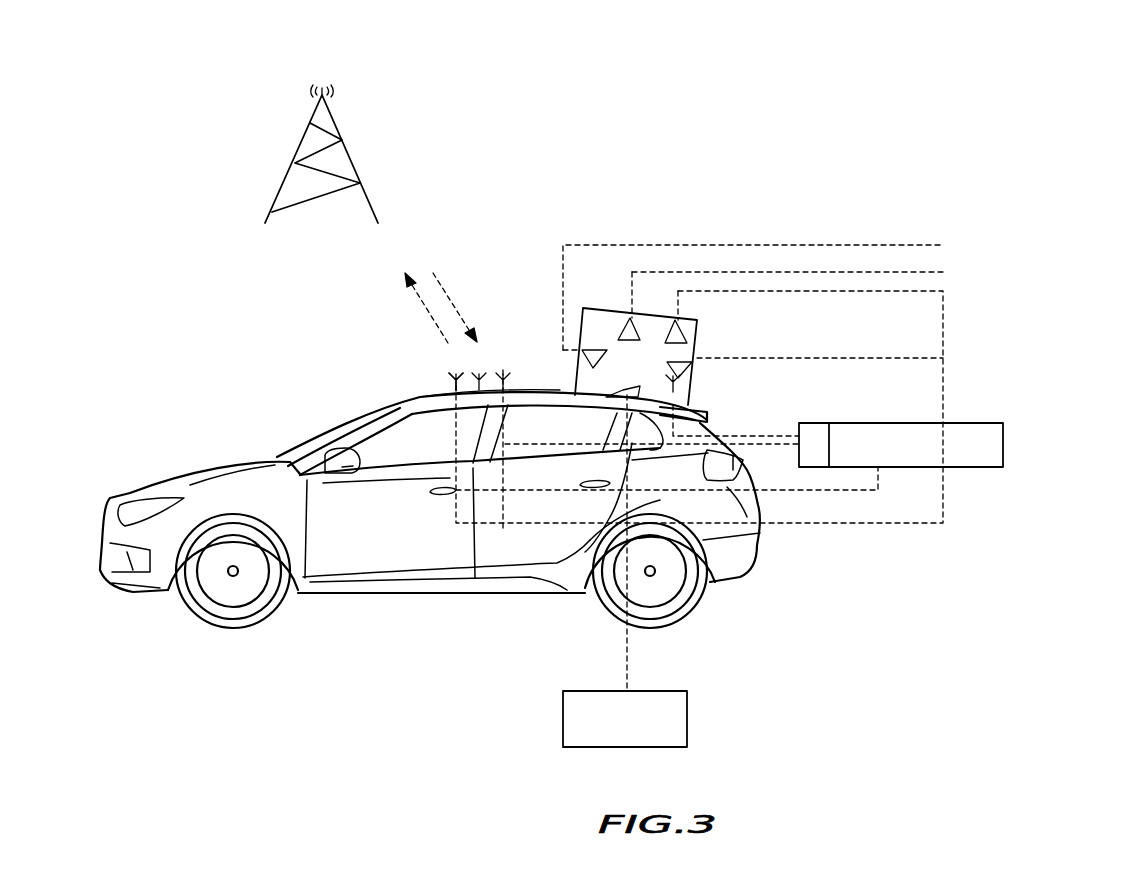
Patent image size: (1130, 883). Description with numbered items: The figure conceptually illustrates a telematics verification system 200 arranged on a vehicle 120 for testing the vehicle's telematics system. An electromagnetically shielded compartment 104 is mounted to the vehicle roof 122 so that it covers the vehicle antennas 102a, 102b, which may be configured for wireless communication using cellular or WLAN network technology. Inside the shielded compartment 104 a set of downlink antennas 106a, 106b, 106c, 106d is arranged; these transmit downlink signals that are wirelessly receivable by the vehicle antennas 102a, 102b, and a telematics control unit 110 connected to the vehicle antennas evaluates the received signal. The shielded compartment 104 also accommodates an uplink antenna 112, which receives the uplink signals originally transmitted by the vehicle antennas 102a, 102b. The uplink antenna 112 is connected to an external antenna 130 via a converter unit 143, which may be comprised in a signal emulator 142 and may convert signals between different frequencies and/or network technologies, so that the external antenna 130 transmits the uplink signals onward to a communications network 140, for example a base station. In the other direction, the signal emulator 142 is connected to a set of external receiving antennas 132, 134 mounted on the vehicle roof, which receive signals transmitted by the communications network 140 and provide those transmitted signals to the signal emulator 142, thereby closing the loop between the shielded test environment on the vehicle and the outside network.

The vehicle 120 is at (228, 405).
The vehicle roof 122 is at (418, 397).
The external antenna 130 is at (508, 382).
The external receiving antenna 132 is at (480, 373).
The external receiving antenna 134 is at (453, 385).
The vehicle antenna 102a is at (615, 386).
The vehicle antenna 102b is at (615, 390).
The telematics verification system 200 is at (683, 222).
The downlink antenna 106a is at (583, 307).
The downlink antenna 106b is at (630, 318).
The downlink antenna 106c is at (698, 320).
The downlink antenna 106d is at (690, 365).
The electromagnetically shielded compartment 104 is at (690, 388).
The uplink antenna 112 is at (690, 405).
The signal emulator 142 is at (1003, 445).
The converter unit 143 is at (810, 450).
The telematics control unit 110 is at (563, 715).
The communications network 140 is at (277, 137).